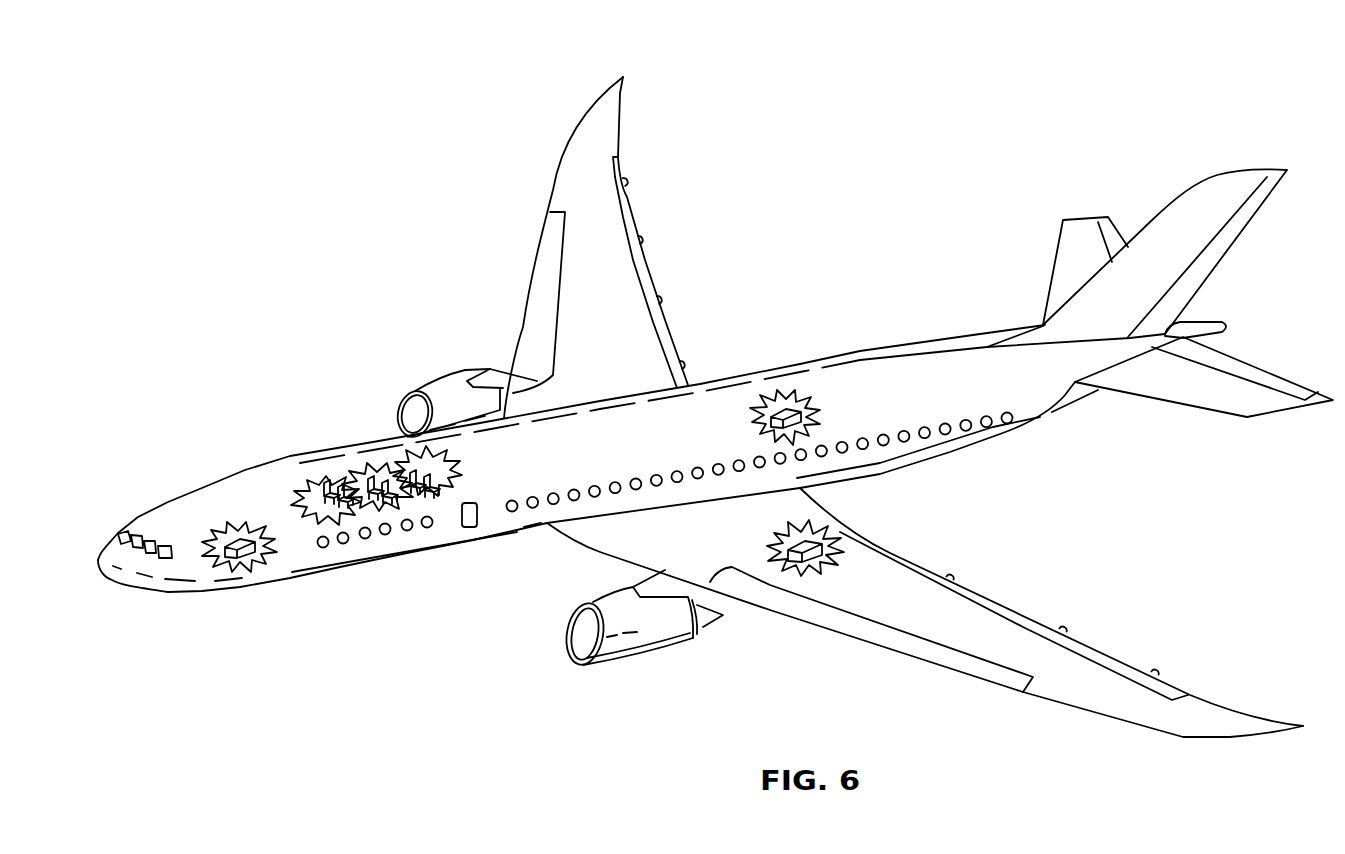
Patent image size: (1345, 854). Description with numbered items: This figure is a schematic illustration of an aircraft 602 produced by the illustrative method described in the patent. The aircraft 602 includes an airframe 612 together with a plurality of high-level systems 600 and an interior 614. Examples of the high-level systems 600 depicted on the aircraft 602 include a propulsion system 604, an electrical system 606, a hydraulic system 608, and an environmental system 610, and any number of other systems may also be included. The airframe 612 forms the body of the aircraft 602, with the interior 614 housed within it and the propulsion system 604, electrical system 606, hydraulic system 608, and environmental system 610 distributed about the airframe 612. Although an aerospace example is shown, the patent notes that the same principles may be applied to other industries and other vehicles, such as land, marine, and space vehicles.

The high-level systems 600 is at (715, 407).
The aircraft 602 is at (715, 407).
The propulsion system 604 is at (446, 390).
The electrical system 606 is at (235, 538).
The hydraulic system 608 is at (813, 540).
The environmental system 610 is at (781, 407).
The airframe 612 is at (370, 479).
The interior 614 is at (357, 497).